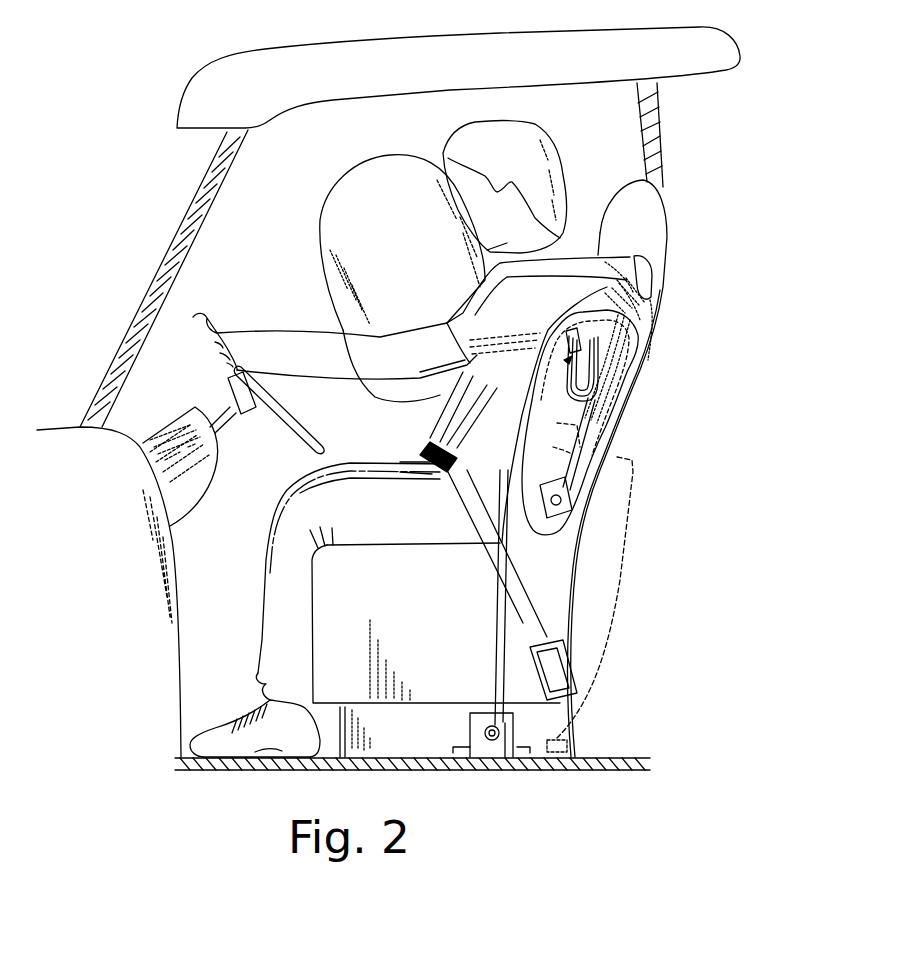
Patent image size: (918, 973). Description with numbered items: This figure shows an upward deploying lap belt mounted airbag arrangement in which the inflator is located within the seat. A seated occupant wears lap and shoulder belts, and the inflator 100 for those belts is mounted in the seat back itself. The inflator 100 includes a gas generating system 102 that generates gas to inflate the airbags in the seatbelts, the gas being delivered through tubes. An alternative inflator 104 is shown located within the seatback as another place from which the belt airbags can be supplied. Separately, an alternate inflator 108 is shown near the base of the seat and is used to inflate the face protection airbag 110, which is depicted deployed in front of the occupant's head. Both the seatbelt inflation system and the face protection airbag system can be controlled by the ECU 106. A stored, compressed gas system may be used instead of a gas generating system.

The inflator 100 is at (653, 468).
The gas generating system 102 is at (580, 337).
The alternative inflator 104 is at (543, 573).
The ECU 106 is at (556, 738).
The alternate inflator 108 is at (490, 748).
The face protection airbag 110 is at (407, 190).